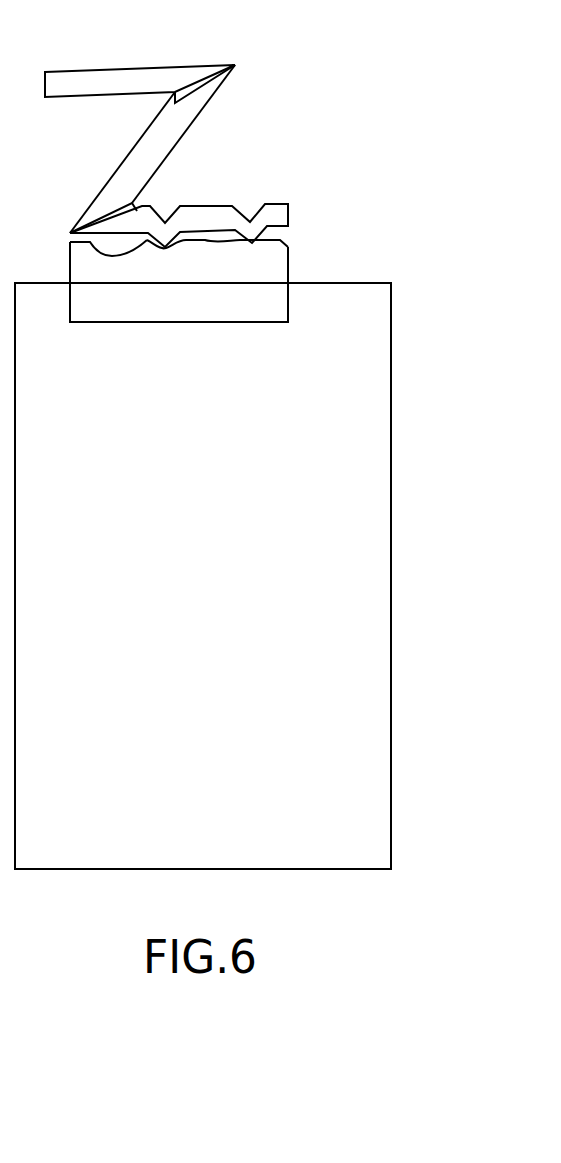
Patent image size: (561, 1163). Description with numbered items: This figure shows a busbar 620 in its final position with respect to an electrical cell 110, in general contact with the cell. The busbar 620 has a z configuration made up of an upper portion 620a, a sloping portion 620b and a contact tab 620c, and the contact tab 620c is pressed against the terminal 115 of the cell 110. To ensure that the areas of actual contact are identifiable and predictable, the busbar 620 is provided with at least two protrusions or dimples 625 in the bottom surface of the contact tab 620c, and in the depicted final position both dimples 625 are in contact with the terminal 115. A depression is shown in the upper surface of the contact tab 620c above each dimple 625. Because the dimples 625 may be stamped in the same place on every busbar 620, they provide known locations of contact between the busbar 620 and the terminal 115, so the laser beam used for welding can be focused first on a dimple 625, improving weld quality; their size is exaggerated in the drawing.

The electrical cell 110 is at (391, 648).
The terminal 115 is at (290, 267).
The busbar 620 is at (221, 132).
The busbar portion 620a is at (103, 75).
The busbar portion 620b is at (133, 158).
The contact tab 620c is at (207, 208).
The dimples 625 is at (70, 241).